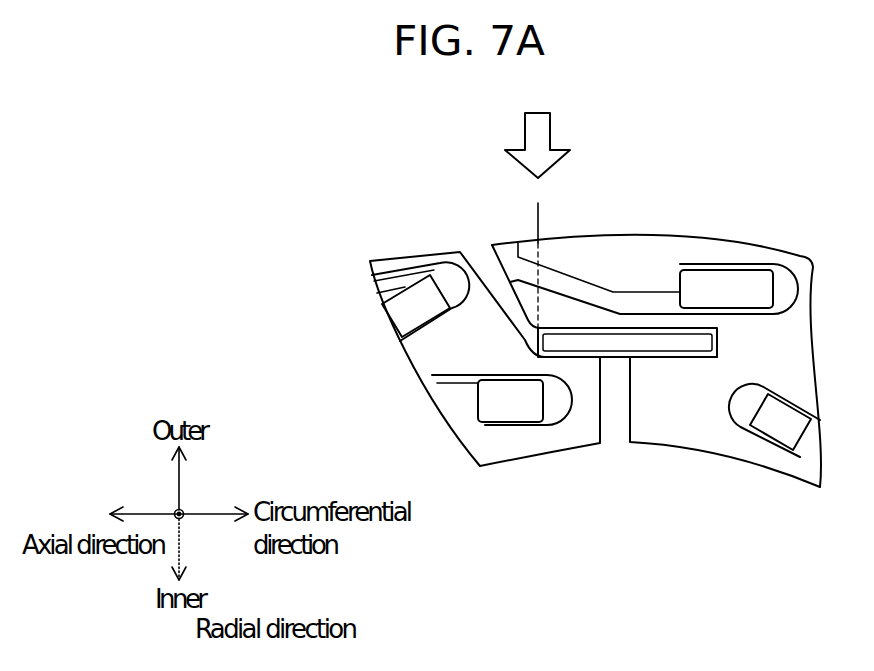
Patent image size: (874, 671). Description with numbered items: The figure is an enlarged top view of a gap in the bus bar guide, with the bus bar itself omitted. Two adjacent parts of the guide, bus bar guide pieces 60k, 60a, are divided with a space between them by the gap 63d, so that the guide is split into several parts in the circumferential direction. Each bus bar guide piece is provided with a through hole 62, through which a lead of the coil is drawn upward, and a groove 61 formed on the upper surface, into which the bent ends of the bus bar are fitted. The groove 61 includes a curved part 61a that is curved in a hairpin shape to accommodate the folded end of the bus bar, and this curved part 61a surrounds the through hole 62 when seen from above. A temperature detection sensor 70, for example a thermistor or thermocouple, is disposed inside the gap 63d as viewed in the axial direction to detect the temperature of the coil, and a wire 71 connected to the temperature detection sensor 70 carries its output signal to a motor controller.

The bus bar guide piece 60k is at (507, 442).
The bus bar guide piece 60a is at (782, 347).
The groove 61 is at (641, 300).
The curved part 61a is at (449, 288).
The through hole 62 is at (405, 294).
The gap 63d is at (477, 254).
The temperature detection sensor 70 is at (657, 340).
The wire 71 is at (538, 210).